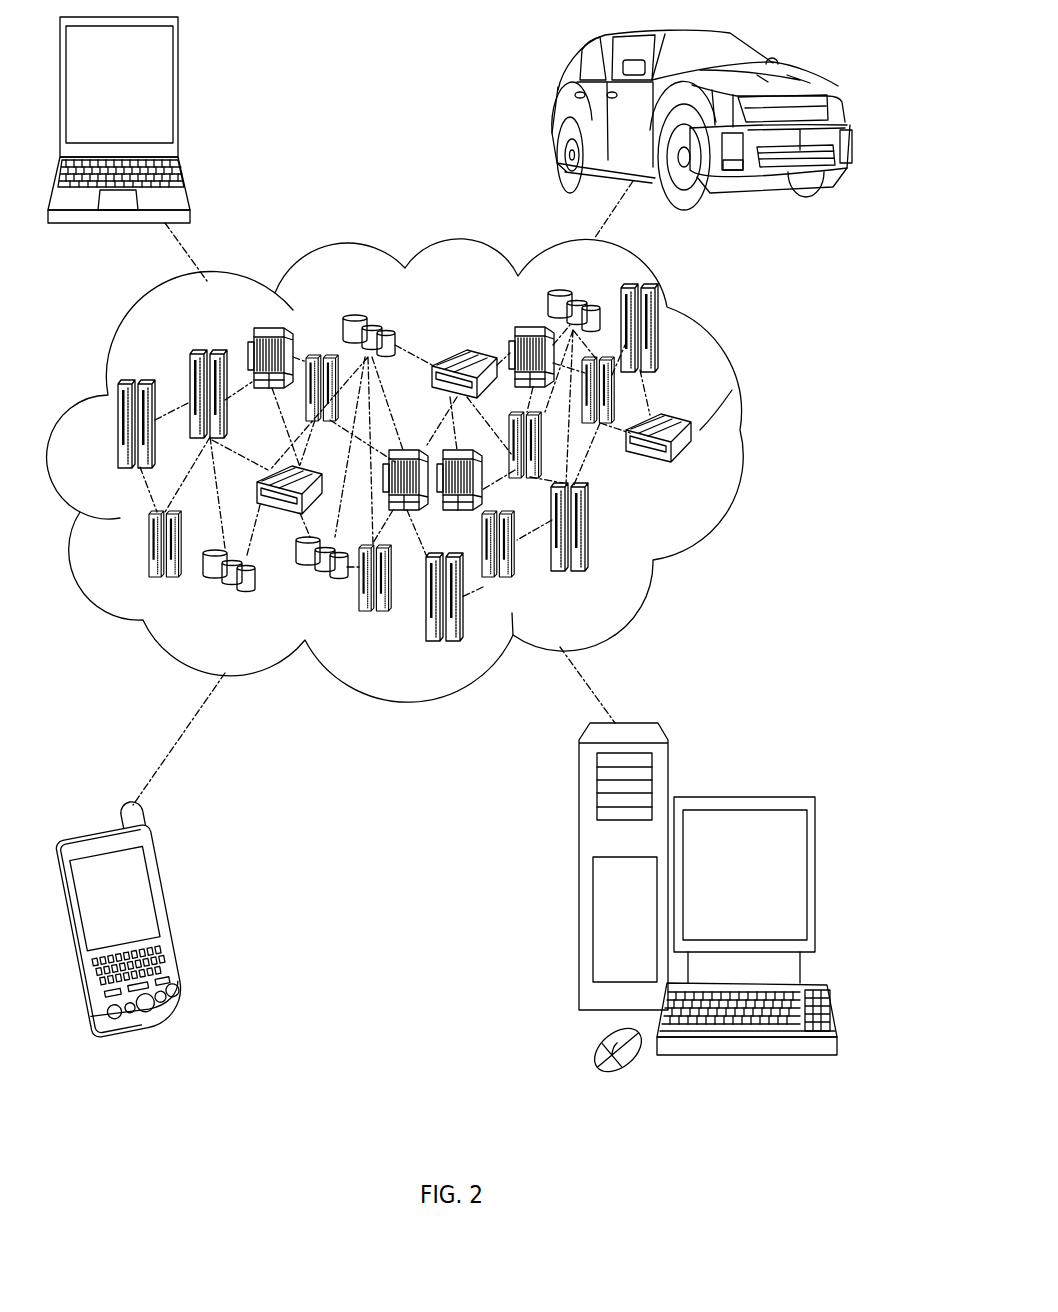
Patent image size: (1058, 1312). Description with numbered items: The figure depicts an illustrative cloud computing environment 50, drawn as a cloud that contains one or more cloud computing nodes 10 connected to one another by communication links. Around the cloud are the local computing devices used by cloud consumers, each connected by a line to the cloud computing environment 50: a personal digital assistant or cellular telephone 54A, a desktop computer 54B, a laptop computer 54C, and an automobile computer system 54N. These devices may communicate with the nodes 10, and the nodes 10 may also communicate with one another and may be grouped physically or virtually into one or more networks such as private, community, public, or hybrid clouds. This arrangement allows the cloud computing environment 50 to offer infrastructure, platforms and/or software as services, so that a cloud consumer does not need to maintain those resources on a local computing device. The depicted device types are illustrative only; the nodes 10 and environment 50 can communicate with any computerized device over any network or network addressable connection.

The cloud computing nodes 10 is at (692, 473).
The cloud computing environment 50 is at (743, 434).
The personal digital assistant or cellular telephone 54A is at (168, 913).
The desktop computer 54B is at (744, 797).
The laptop computer 54C is at (177, 97).
The automobile computer system 54N is at (557, 117).